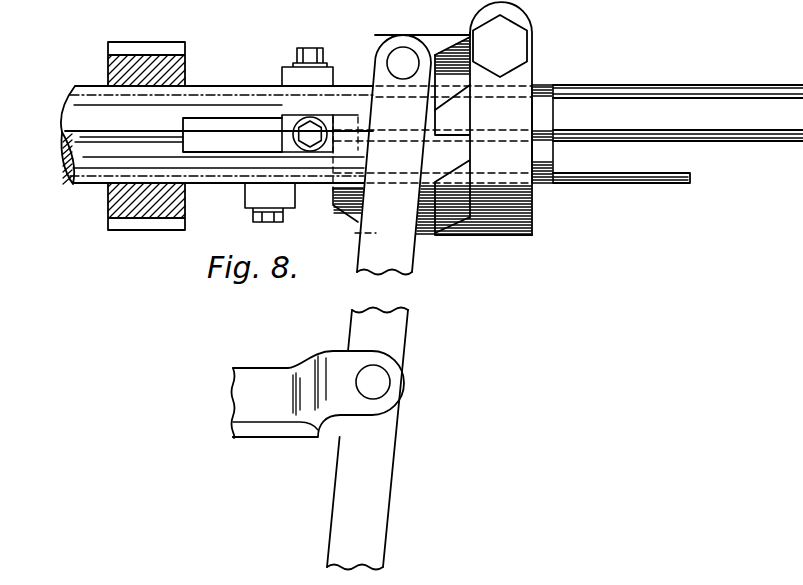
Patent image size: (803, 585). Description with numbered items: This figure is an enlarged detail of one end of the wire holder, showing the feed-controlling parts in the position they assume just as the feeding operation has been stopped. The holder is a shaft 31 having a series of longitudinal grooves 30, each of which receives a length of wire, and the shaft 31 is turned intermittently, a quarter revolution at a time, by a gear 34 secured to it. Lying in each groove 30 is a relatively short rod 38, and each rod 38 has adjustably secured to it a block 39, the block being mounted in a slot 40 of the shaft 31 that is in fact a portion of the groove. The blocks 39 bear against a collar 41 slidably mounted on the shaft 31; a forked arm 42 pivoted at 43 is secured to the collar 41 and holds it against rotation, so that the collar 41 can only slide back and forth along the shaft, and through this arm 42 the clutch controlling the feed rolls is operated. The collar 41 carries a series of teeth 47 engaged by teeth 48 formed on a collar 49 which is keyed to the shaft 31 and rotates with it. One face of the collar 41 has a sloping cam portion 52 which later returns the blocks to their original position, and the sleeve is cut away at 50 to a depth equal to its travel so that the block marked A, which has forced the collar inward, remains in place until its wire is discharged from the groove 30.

The grooves 30 is at (90, 140).
The shaft 31 is at (83, 108).
The gear 34 is at (135, 228).
The rods 38 is at (643, 122).
The blocks 39 is at (289, 75).
The slot 40 is at (203, 122).
The collar 41 is at (443, 56).
The forked arm 42 is at (397, 265).
The pivot 43 is at (372, 388).
The teeth 47 is at (530, 2).
The teeth 48 is at (474, 134).
The collar 49 is at (518, 75).
The cutaway portion 50 is at (372, 48).
The sloping cam portion 52 is at (352, 201).
The block A is at (325, 150).